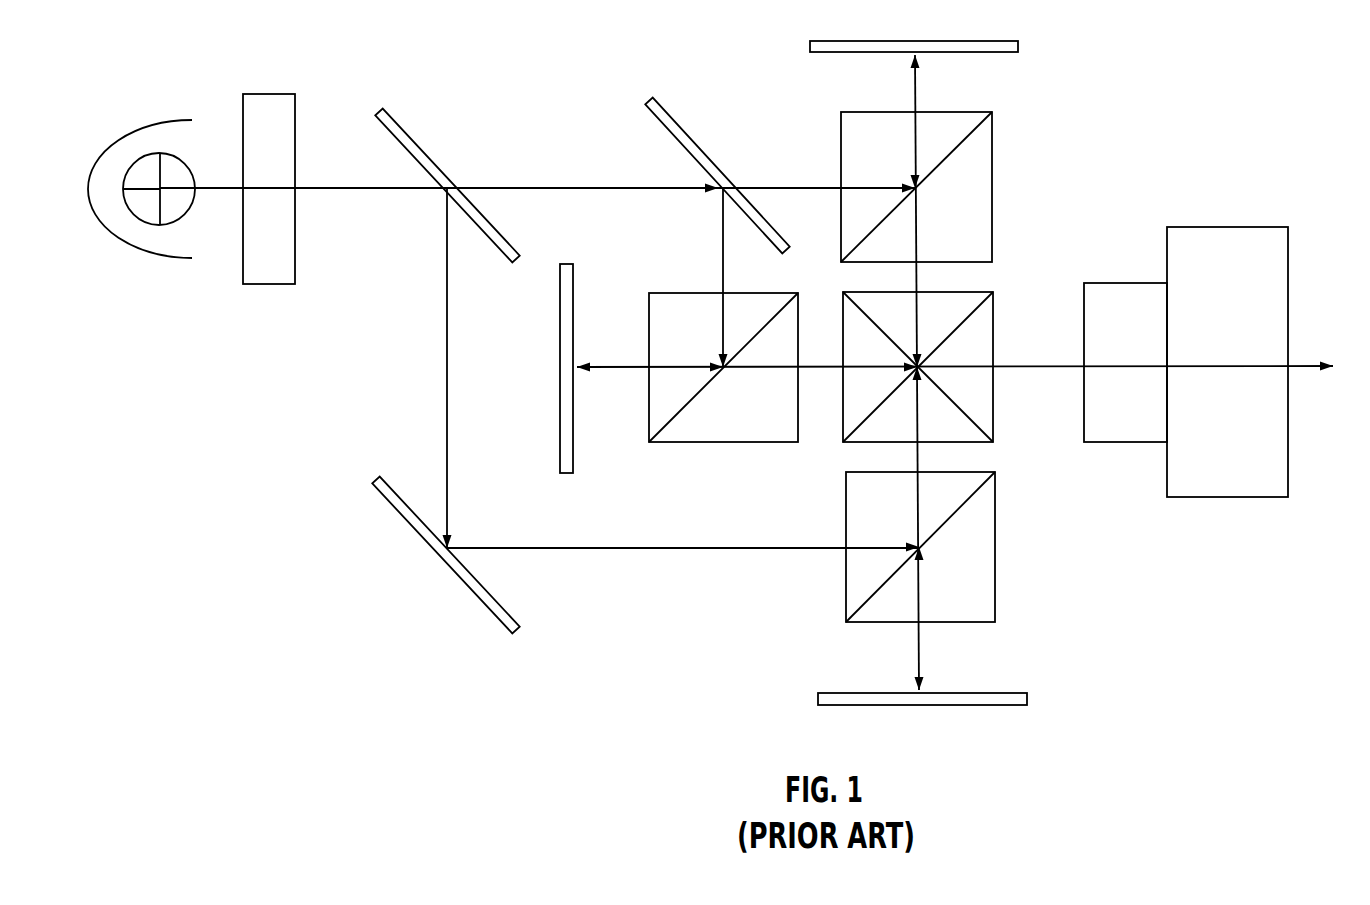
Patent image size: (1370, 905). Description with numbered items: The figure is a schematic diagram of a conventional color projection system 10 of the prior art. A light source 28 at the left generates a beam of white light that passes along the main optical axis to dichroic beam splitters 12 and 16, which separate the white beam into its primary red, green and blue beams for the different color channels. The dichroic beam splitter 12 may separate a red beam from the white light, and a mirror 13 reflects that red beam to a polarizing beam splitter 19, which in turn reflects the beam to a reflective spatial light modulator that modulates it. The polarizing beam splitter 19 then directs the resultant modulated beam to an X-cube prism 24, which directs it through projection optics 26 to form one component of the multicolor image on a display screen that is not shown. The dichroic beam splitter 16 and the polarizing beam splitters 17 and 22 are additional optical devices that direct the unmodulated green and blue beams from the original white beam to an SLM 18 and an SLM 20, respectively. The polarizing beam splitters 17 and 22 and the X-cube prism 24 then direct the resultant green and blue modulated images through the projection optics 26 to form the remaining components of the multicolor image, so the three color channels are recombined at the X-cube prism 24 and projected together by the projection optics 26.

The color projection system 10 is at (1136, 174).
The dichroic beam splitter 12 is at (268, 94).
The mirror 13 is at (376, 477).
The dichroic beam splitter 16 is at (380, 108).
The polarizing beam splitter 17 is at (992, 178).
The SLM 18 is at (913, 40).
The polarizing beam splitter 19 is at (995, 540).
The SLM 20 is at (560, 352).
The polarizing beam splitter 22 is at (702, 292).
The X-cube prism 24 is at (993, 330).
The projection optics 26 is at (1227, 227).
The light source 28 is at (152, 153).